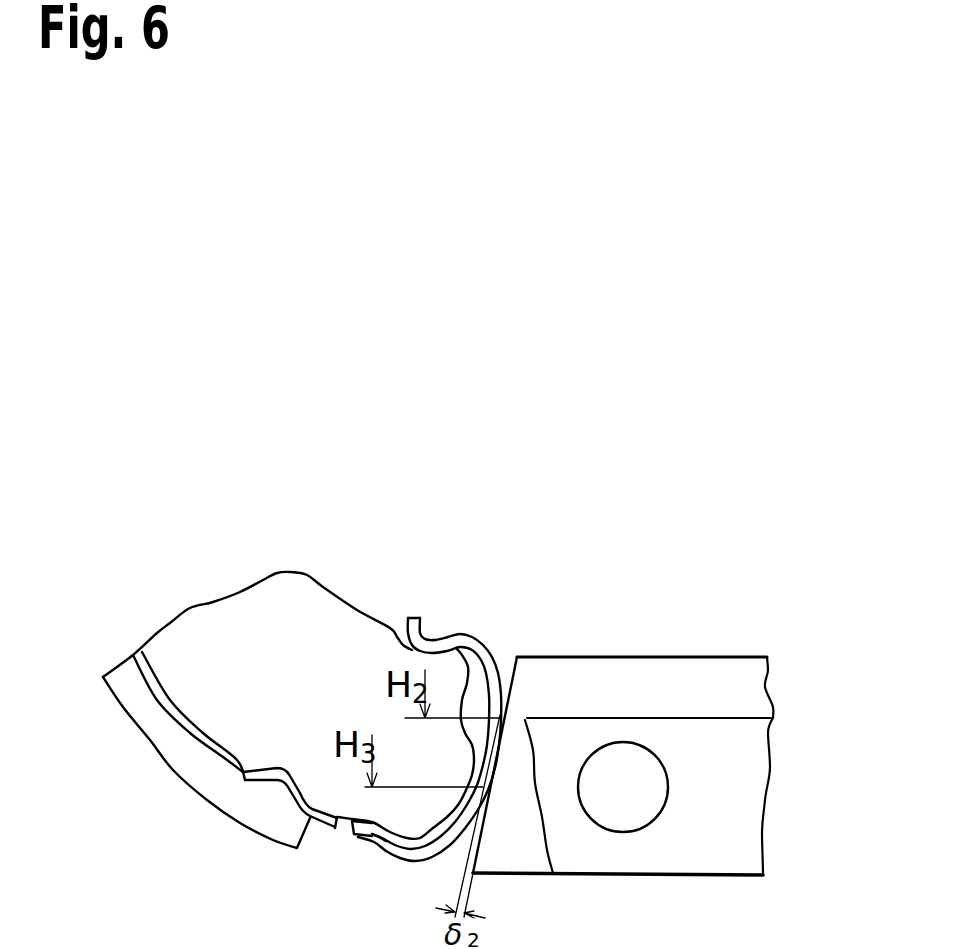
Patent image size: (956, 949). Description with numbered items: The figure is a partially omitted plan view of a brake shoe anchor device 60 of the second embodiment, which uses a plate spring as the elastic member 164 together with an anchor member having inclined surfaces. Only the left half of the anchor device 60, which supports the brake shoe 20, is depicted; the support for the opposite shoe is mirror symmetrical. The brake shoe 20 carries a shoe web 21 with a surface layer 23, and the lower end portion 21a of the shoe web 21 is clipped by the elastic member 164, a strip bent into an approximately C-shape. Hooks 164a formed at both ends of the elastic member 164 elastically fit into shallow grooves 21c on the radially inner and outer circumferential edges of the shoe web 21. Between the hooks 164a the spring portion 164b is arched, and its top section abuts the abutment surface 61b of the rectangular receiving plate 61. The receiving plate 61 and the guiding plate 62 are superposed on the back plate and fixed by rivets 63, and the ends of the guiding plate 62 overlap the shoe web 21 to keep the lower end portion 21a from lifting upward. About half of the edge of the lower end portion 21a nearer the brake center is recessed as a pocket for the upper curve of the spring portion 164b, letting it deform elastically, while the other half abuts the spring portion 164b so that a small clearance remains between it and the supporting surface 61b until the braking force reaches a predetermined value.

The brake shoe 20 is at (165, 622).
The shoe web 21 is at (280, 582).
The lower end portion of the shoe web 21a is at (310, 742).
The shallow groove 21c is at (408, 628).
The surface layer band 23 is at (158, 745).
The elastic member 164 is at (483, 632).
The hook 164a is at (424, 632).
The spring portion 164b is at (497, 672).
The anchor device 60 is at (707, 652).
The receiving plate 61 is at (773, 690).
The abutment surface 61b is at (477, 850).
The guiding plate 62 is at (762, 812).
The rivet 63 is at (640, 822).